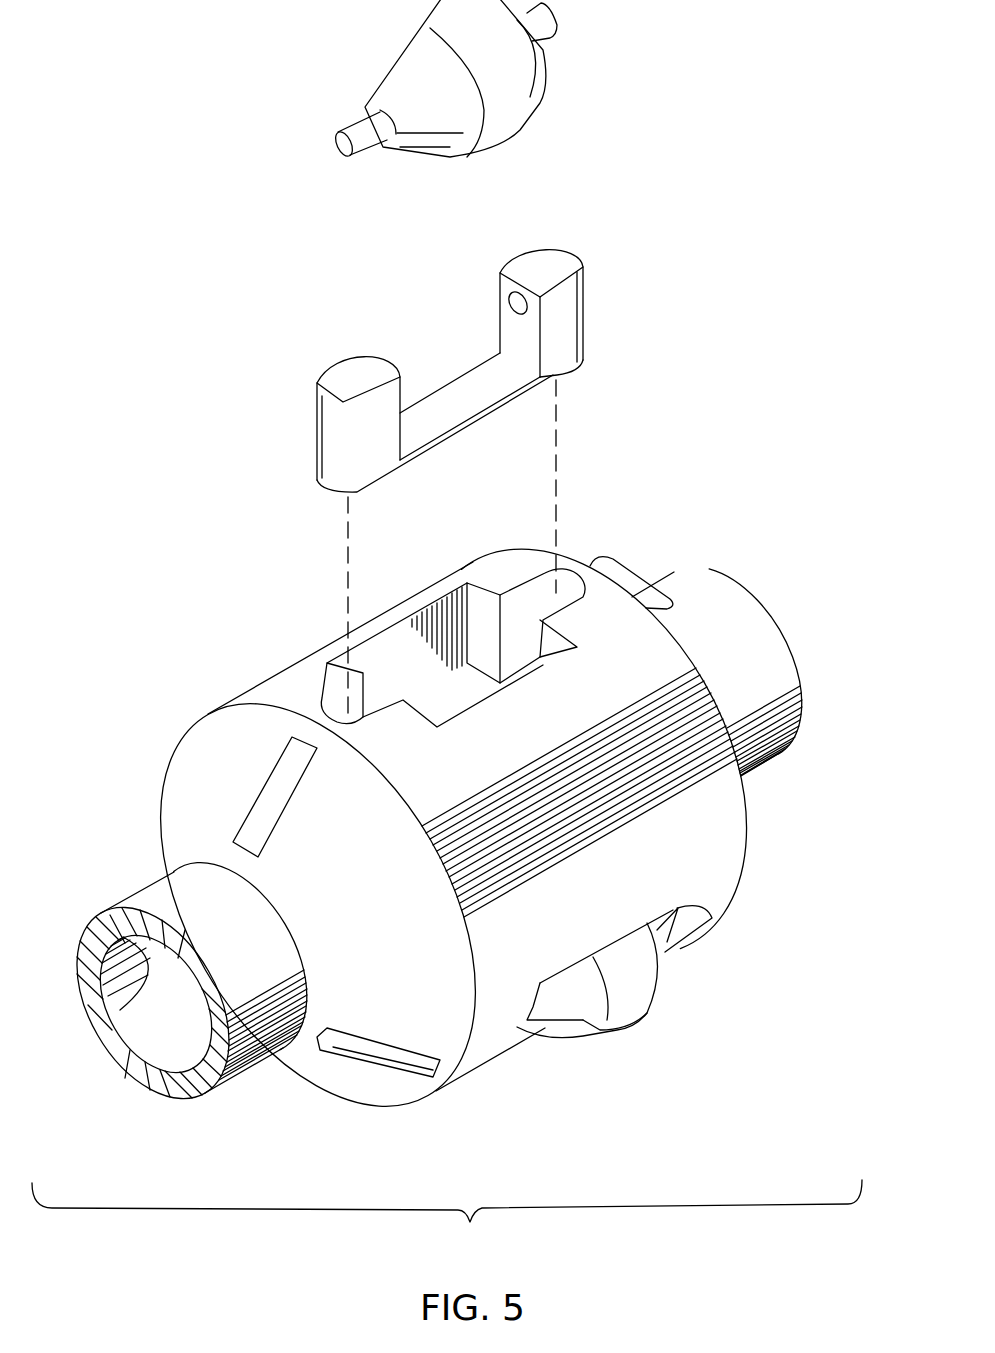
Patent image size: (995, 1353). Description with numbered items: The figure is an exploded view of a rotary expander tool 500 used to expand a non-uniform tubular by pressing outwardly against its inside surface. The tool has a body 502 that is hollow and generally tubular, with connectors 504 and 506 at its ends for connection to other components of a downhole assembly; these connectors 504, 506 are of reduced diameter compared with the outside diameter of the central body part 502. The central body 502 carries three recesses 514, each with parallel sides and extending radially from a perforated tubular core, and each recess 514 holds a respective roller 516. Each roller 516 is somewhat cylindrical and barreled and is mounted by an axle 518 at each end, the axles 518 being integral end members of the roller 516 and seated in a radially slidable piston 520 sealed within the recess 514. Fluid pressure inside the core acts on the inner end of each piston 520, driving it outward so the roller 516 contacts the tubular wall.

The rotary expander tool 500 is at (115, 503).
The body 502 is at (700, 972).
The connector 504 is at (785, 655).
The connector 506 is at (152, 893).
The recess 514 is at (458, 695).
The roller 516 is at (530, 97).
The axle 518 is at (352, 122).
The piston 520 is at (565, 258).